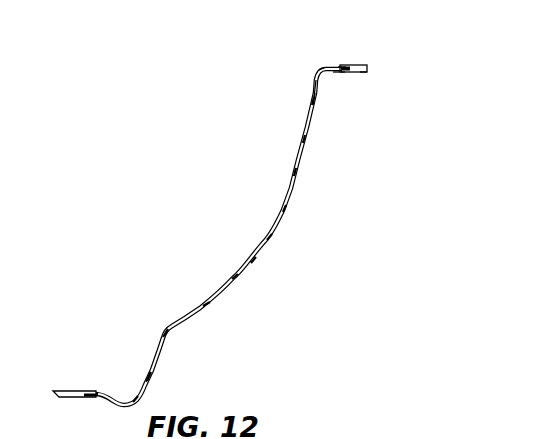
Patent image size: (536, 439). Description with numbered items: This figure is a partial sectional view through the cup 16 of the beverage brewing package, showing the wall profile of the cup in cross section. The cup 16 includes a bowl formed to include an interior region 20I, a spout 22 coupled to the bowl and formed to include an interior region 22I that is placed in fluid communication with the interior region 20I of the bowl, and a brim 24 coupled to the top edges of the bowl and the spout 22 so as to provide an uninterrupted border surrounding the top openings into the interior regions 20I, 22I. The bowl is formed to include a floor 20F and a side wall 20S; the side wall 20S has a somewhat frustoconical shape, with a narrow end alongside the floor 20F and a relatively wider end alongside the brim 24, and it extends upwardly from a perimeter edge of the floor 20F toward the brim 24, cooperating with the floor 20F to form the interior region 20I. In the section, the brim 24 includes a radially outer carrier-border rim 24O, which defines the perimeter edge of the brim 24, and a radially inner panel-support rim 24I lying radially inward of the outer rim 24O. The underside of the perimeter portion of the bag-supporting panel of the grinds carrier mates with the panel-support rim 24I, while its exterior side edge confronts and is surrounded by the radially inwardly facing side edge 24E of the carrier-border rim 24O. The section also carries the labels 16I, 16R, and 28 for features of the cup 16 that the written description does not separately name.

The cup 16 is at (392, 36).
The clip inner side 16I is at (143, 125).
The clip rounded corner 16R is at (322, 70).
The floor 20F is at (79, 390).
The interior region 20I is at (129, 215).
The side wall 20S is at (153, 373).
The spout 22 is at (310, 194).
The interior region 22I is at (244, 140).
The brim 24 is at (354, 55).
The radially inwardly facing side edge 24E is at (341, 67).
The radially inner panel-support rim 24I is at (334, 74).
The radially outer carrier-border rim 24O is at (365, 73).
The bend portion 28 is at (175, 360).